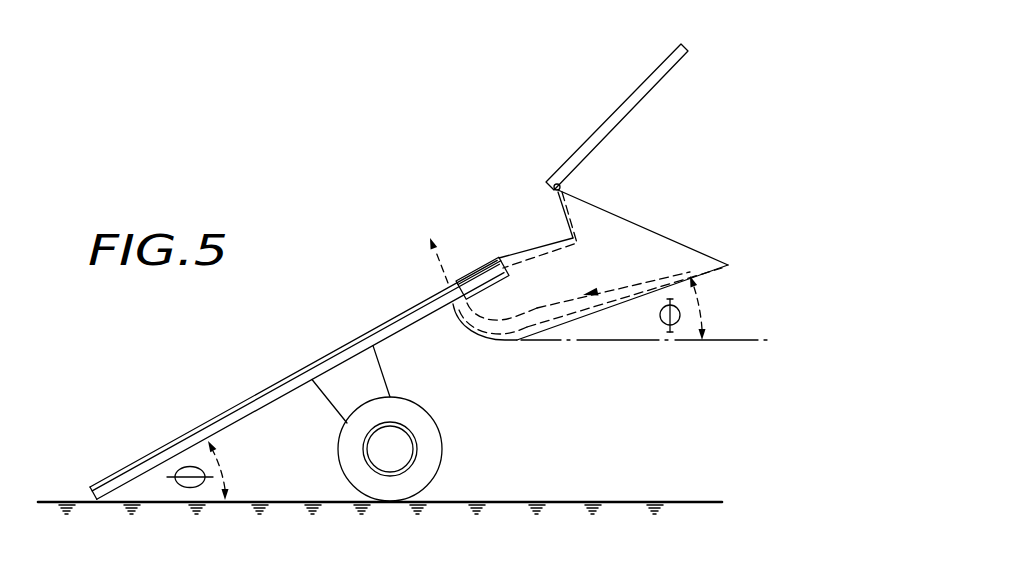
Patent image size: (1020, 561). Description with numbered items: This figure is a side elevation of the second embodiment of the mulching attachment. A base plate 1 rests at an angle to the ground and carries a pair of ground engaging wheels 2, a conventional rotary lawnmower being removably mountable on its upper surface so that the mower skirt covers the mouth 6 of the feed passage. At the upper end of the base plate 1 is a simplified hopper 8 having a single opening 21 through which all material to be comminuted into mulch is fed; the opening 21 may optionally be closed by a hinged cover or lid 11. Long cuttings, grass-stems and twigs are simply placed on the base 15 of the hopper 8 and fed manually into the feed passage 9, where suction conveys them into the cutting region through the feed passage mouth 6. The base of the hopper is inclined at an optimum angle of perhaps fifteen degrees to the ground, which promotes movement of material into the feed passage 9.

The base plate 1 is at (290, 376).
The ground engaging wheel 2 is at (425, 432).
The feed passage mouth 6 is at (451, 287).
The simplified hopper 8 is at (700, 231).
The feed passage 9 is at (517, 305).
The hinged cover or lid 11 is at (576, 156).
The base of feed hopper 15 is at (678, 287).
The opening of hopper 21 is at (613, 207).